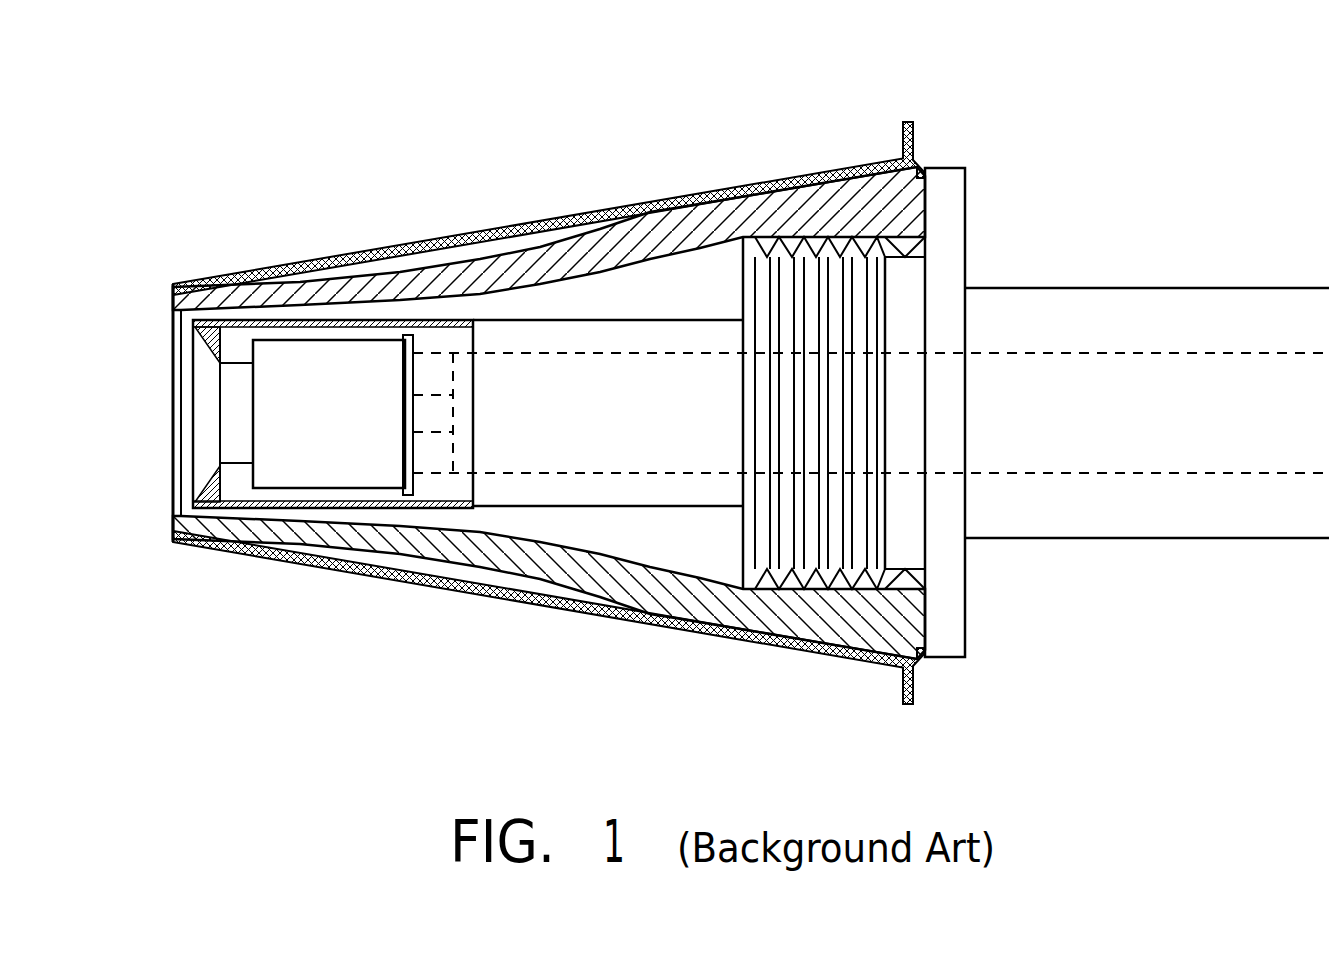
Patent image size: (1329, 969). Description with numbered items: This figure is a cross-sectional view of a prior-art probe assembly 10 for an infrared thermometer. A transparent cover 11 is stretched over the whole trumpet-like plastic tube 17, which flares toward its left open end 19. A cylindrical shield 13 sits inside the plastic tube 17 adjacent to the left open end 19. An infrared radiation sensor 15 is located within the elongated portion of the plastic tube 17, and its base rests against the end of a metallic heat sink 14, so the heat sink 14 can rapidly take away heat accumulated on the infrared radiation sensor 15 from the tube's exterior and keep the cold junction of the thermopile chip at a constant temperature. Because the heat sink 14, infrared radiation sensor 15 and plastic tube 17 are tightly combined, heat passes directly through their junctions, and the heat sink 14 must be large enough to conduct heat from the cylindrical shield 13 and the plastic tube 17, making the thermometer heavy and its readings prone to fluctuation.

The probe assembly 10 is at (552, 118).
The transparent cover 11 is at (665, 630).
The cylindrical shield 13 is at (273, 508).
The metallic heat sink 14 is at (950, 638).
The infrared radiation sensor 15 is at (362, 462).
The trumpet-like plastic tube 17 is at (518, 565).
The left open end 19 is at (148, 470).